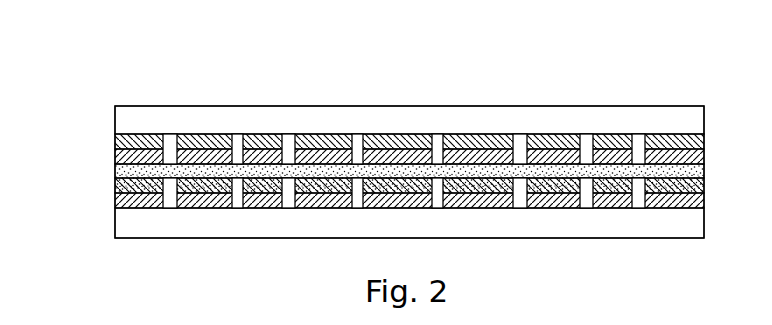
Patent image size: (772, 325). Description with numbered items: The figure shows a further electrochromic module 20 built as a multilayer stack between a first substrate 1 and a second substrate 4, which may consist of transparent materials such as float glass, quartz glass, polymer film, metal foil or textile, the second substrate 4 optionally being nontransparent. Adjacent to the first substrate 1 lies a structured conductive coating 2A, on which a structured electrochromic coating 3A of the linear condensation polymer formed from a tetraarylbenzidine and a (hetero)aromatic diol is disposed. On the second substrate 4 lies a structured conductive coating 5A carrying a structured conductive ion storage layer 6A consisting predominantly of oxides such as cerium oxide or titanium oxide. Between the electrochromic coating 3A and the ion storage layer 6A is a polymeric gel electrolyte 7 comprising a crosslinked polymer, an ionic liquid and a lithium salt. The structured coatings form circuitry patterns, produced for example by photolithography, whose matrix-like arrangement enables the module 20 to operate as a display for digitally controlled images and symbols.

The electrochromic module 20 is at (418, 78).
The first substrate 1 is at (115, 118).
The structured conductive coating 2A is at (115, 142).
The structured electrochromic coating 3A is at (115, 158).
The polymeric gel electrolyte 7 is at (262, 177).
The structured conductive ion storage layer 6A is at (115, 185).
The structured conductive coating 5A is at (115, 203).
The second substrate 4 is at (114, 225).